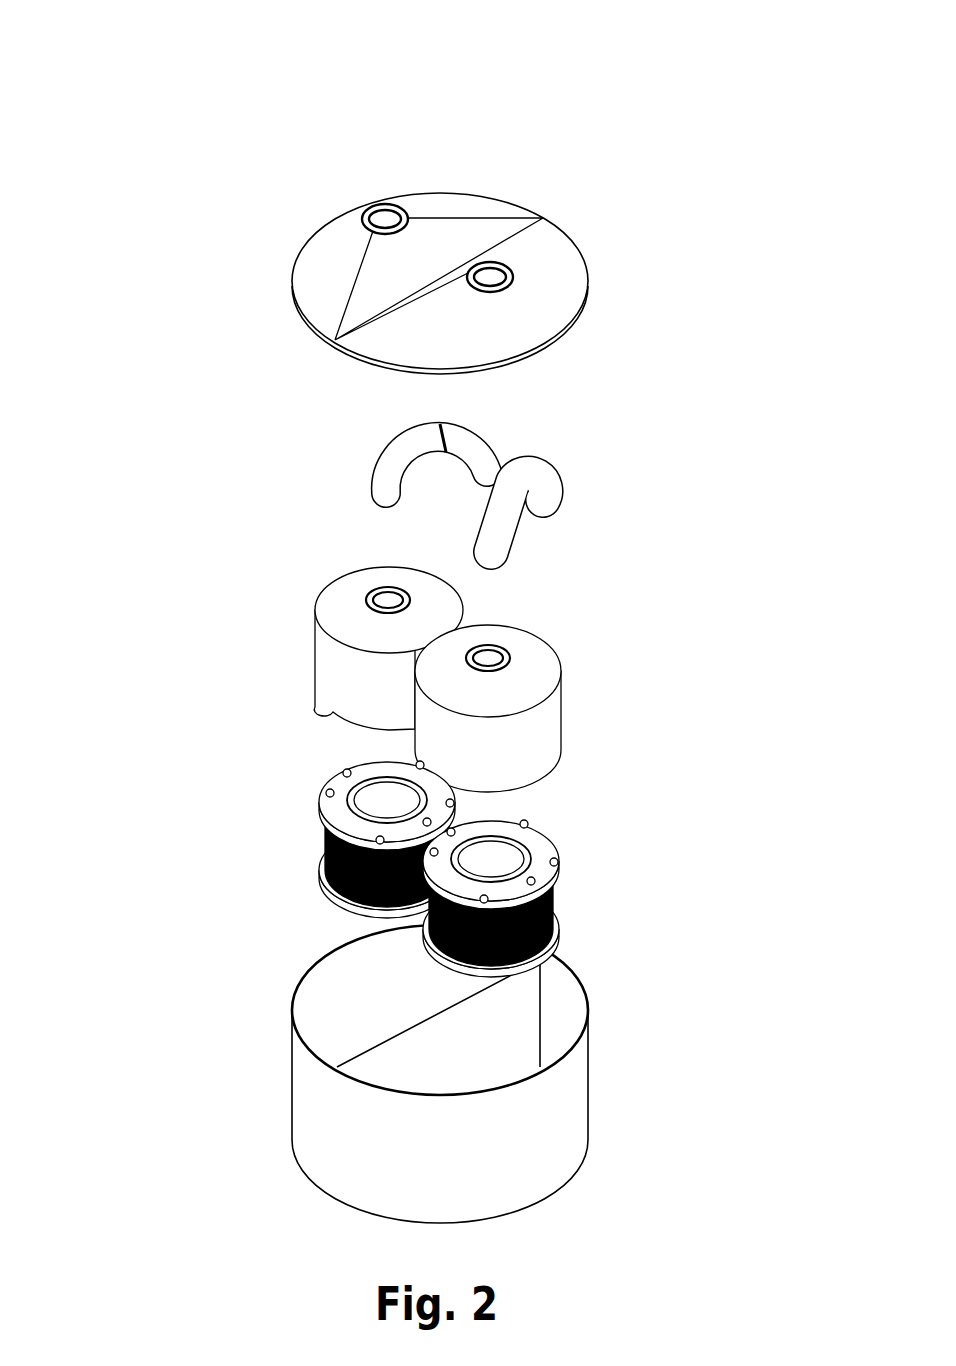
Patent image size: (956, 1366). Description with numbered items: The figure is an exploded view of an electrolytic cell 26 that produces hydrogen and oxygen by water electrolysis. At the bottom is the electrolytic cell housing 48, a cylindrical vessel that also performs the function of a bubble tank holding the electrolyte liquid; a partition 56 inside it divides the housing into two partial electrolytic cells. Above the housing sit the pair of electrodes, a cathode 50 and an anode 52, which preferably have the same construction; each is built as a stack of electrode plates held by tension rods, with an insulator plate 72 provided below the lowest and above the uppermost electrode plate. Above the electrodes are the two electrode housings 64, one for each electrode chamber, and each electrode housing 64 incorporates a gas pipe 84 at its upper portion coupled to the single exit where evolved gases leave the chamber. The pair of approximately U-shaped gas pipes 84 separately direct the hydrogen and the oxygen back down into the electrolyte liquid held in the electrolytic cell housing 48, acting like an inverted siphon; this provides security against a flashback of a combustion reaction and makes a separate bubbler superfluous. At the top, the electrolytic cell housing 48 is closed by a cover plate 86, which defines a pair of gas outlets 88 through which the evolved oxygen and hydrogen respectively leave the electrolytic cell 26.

The electrolytic cell 26 is at (534, 103).
The electrolytic cell housing 48 is at (266, 1009).
The cathode 50 is at (322, 847).
The anode 52 is at (553, 892).
The partition 56 is at (377, 1060).
The electrode housing 64 is at (357, 567).
The insulator plate 72 is at (340, 790).
The gas pipe 84 is at (502, 402).
The cover plate 86 is at (330, 262).
The gas outlet 88 is at (392, 204).